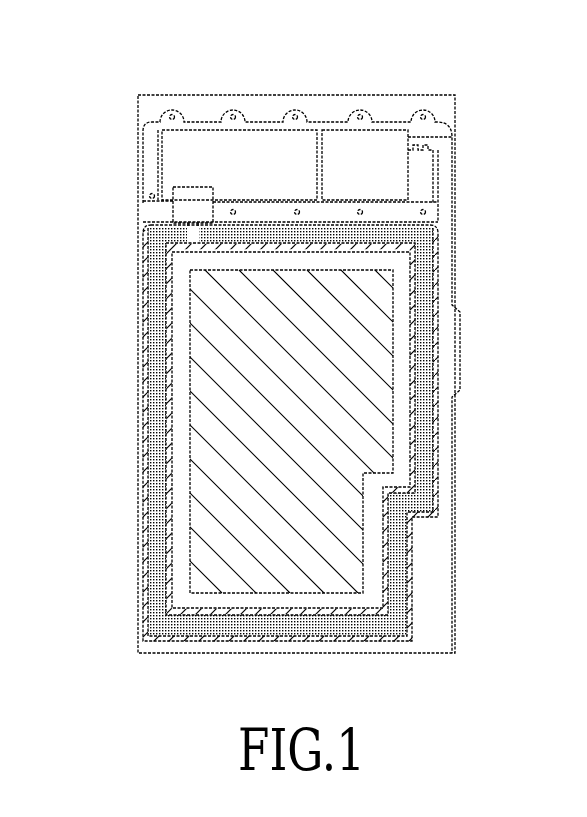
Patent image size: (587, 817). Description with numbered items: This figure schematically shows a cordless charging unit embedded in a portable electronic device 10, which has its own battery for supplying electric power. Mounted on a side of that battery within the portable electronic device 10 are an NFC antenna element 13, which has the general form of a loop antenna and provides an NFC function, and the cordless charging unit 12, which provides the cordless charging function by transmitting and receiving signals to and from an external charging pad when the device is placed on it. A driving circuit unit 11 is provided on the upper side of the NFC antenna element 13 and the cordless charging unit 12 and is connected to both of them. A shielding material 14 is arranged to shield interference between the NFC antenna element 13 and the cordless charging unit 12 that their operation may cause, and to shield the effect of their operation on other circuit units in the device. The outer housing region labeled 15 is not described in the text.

The portable electronic device 10 is at (112, 134).
The driving circuit unit 11 is at (386, 120).
The cordless charging unit 12 is at (427, 293).
The NFC antenna element 13 is at (383, 355).
The shielding material 14 is at (427, 517).
The rear cover 15 is at (445, 598).